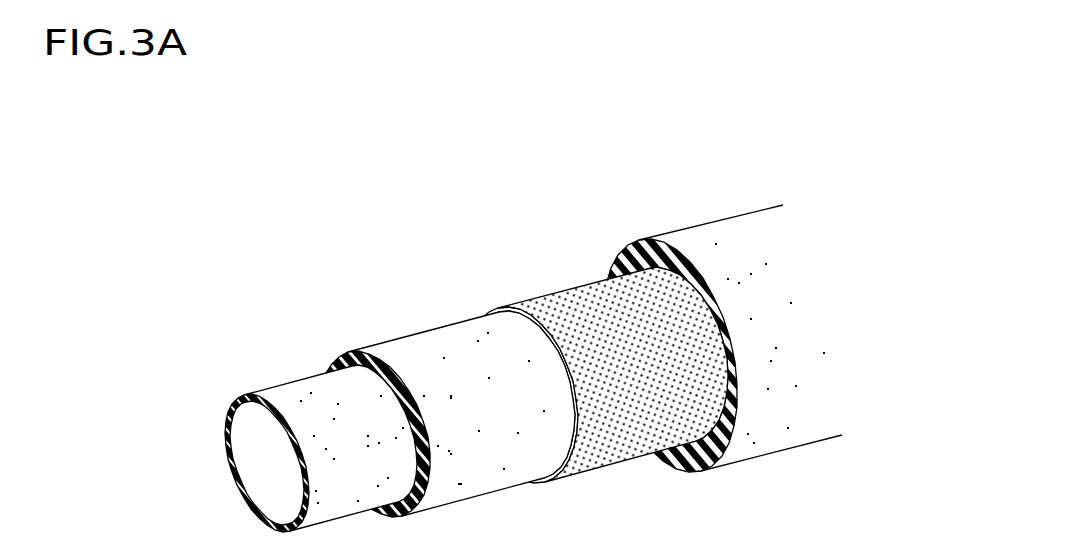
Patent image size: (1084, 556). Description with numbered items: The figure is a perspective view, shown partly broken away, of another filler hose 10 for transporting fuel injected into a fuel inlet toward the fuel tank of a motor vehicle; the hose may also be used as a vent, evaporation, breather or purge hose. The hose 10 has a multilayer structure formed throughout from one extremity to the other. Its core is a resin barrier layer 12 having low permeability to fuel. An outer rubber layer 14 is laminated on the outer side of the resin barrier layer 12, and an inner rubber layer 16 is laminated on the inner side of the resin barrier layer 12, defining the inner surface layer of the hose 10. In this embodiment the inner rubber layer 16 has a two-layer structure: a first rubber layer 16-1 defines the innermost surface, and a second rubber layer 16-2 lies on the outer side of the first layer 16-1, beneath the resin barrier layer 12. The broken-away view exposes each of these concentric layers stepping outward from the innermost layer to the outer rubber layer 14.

The filler hose 10 is at (513, 324).
The resin barrier layer 12 is at (565, 302).
The outer rubber layer 14 is at (722, 237).
The inner rubber layer 16 is at (365, 350).
The first layer 16-1 is at (291, 388).
The second layer 16-2 is at (418, 350).